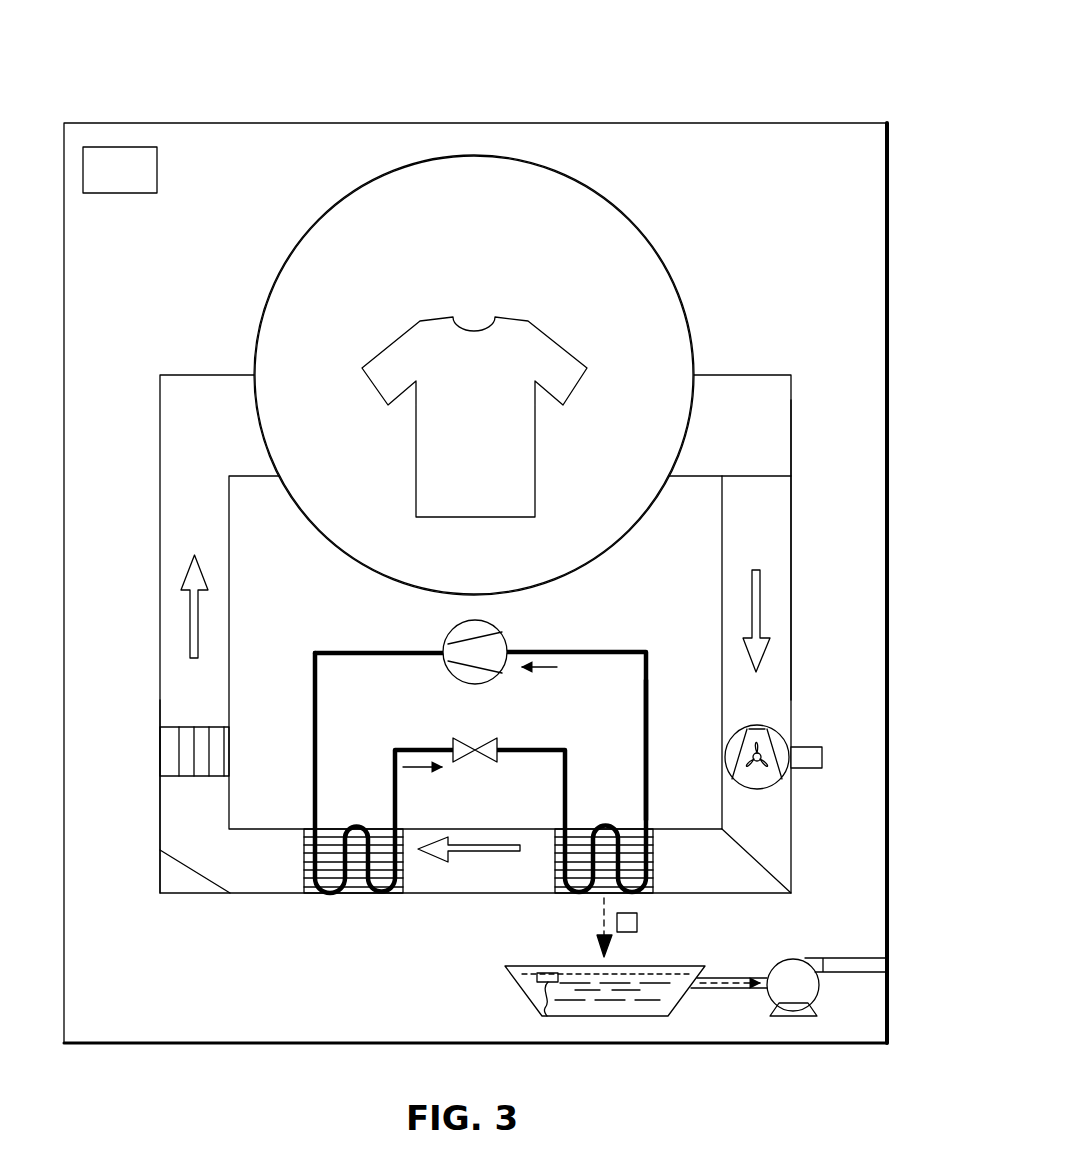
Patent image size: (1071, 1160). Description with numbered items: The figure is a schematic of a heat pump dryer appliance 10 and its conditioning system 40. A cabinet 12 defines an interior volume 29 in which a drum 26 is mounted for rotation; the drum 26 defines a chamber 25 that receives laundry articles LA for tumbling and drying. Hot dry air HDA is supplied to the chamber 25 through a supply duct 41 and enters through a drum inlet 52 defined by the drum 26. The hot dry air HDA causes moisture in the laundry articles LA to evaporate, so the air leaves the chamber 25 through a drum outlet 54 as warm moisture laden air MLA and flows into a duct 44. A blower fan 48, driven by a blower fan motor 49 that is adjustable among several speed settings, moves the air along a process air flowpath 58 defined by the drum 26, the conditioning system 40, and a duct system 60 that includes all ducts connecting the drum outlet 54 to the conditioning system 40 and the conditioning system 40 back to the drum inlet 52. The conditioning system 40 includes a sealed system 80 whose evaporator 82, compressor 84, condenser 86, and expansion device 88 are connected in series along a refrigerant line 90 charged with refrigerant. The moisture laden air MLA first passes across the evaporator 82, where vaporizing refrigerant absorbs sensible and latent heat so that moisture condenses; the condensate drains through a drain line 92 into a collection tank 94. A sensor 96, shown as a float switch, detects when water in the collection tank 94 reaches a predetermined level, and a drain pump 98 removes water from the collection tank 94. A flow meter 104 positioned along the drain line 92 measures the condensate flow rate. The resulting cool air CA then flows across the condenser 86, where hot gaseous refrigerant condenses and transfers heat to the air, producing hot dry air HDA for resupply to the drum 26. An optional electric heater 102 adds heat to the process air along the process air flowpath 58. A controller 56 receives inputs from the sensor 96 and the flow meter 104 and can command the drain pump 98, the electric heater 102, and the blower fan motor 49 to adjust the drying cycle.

The dryer appliance 10 is at (236, 63).
The cabinet 12 is at (746, 122).
The chamber 25 is at (567, 238).
The drum 26 is at (310, 233).
The interior volume 29 is at (135, 990).
The conditioning system 40 is at (320, 632).
The supply duct 41 is at (158, 829).
The duct 44 is at (791, 505).
The blower fan 48 is at (765, 788).
The blower fan motor 49 is at (806, 747).
The drum inlet 52 is at (250, 429).
The drum outlet 54 is at (710, 432).
The controller 56 is at (106, 185).
The process air flowpath 58 is at (770, 859).
The duct system 60 is at (142, 862).
The sealed system 80 is at (648, 641).
The evaporator 82 is at (650, 850).
The compressor 84 is at (450, 636).
The condenser 86 is at (330, 898).
The expansion device 88 is at (470, 738).
The refrigerant line 90 is at (648, 740).
The drain line 92 is at (604, 913).
The collection tank 94 is at (690, 950).
The sensor 96 is at (540, 978).
The drain pump 98 is at (786, 960).
The electric heater 102 is at (160, 751).
The flow meter 104 is at (637, 925).
The laundry articles LA is at (415, 345).
The hot dry air HDA is at (195, 629).
The moisture laden air MLA is at (754, 607).
The cool air CA is at (469, 864).